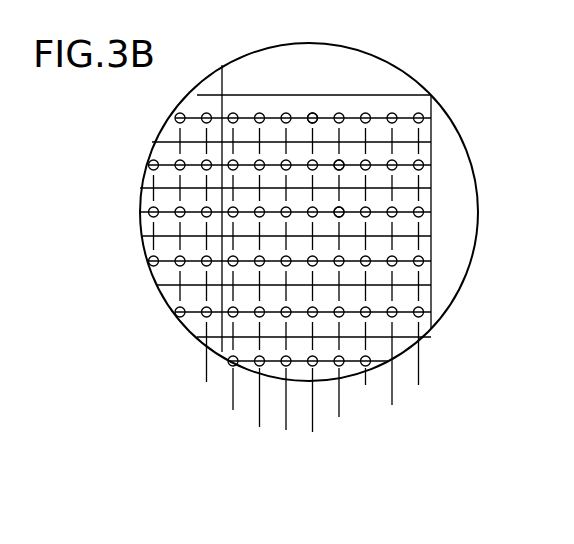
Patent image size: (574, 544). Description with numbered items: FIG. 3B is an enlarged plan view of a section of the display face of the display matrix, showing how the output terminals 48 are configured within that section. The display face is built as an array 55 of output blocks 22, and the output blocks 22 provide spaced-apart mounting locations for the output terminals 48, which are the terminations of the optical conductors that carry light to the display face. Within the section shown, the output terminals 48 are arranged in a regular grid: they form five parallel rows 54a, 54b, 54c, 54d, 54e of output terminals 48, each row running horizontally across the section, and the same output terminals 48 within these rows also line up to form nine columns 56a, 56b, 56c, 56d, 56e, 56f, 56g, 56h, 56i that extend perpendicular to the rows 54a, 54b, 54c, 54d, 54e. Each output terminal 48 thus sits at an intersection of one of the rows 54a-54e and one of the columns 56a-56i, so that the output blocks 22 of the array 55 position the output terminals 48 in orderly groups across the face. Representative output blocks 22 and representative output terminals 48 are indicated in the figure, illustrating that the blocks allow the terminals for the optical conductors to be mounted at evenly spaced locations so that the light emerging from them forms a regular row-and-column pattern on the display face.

The output block 22 is at (215, 96).
The output terminal 48 is at (340, 207).
The array 55 is at (276, 94).
The row of output terminals 54a is at (175, 118).
The row of output terminals 54b is at (148, 165).
The row of output terminals 54c is at (140, 210).
The row of output terminals 54d is at (147, 261).
The row of output terminals 54e is at (175, 312).
The column of output terminals 56a is at (418, 383).
The column of output terminals 56b is at (392, 393).
The column of output terminals 56c is at (366, 405).
The column of output terminals 56d is at (339, 400).
The column of output terminals 56e is at (312, 407).
The column of output terminals 56f is at (286, 402).
The column of output terminals 56g is at (260, 392).
The column of output terminals 56h is at (233, 390).
The column of output terminals 56i is at (206, 362).